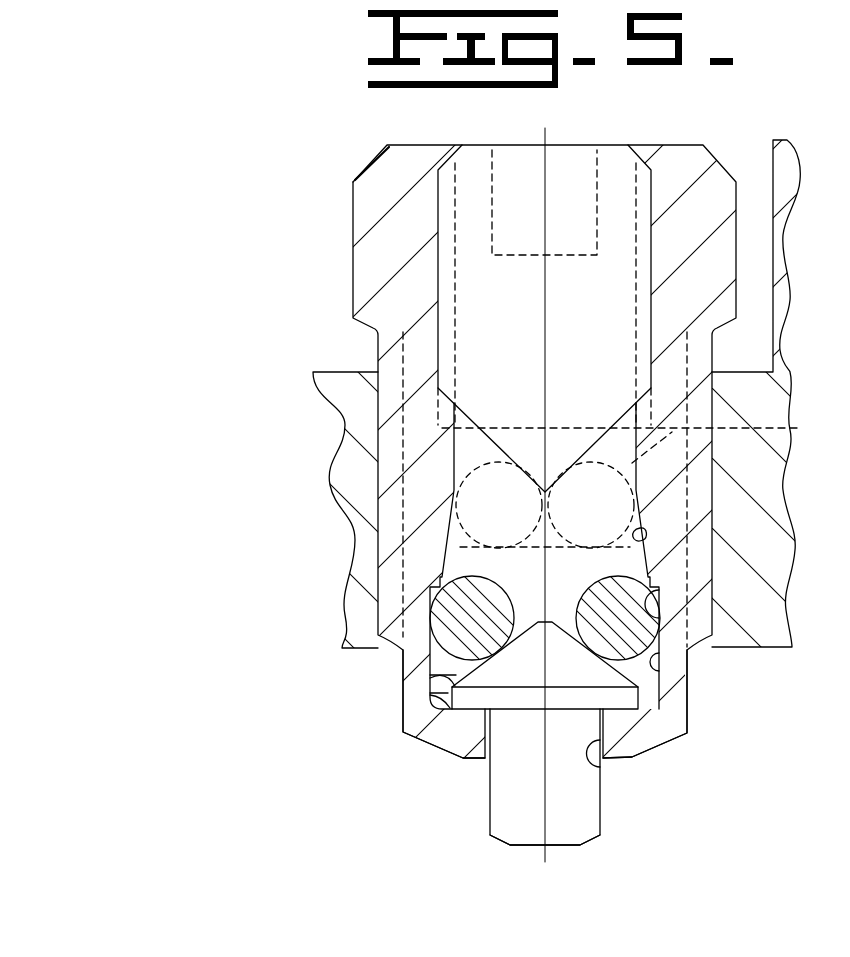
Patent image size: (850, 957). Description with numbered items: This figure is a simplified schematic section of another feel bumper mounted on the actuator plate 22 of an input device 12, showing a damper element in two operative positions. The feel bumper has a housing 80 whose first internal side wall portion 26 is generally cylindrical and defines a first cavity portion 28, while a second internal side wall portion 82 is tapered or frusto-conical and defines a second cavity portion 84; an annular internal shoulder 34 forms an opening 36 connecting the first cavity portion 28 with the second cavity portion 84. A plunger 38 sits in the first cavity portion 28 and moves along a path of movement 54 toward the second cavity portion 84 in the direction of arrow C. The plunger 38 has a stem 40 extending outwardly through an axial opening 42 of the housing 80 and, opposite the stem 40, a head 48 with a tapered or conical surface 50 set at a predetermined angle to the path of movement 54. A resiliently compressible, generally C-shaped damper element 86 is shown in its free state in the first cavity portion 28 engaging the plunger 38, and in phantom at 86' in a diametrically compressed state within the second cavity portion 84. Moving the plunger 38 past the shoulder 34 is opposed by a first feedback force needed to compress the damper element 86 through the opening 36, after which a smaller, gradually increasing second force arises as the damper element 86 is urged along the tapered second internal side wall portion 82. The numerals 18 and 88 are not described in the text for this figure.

The input device 12 is at (322, 750).
The valve body 18 is at (694, 744).
The actuator plate 22 is at (790, 650).
The first internal side wall portion 26 is at (660, 672).
The first cavity portion 28 is at (660, 712).
The annular internal shoulder 34 is at (665, 617).
The opening 36 is at (660, 577).
The plunger 38 is at (612, 840).
The stem 40 is at (490, 770).
The axial opening 42 is at (600, 770).
The head 48 is at (430, 697).
The tapered or conical surface 50 is at (430, 678).
The path of movement 54 is at (545, 140).
The housing 80 is at (403, 732).
The second internal side wall portion 82 is at (643, 540).
The second cavity portion 84 is at (633, 558).
The damper element 86 is at (378, 678).
The damper element in compressed state 86' is at (639, 439).
The conical seat 88 is at (497, 443).
The arrow C is at (469, 800).